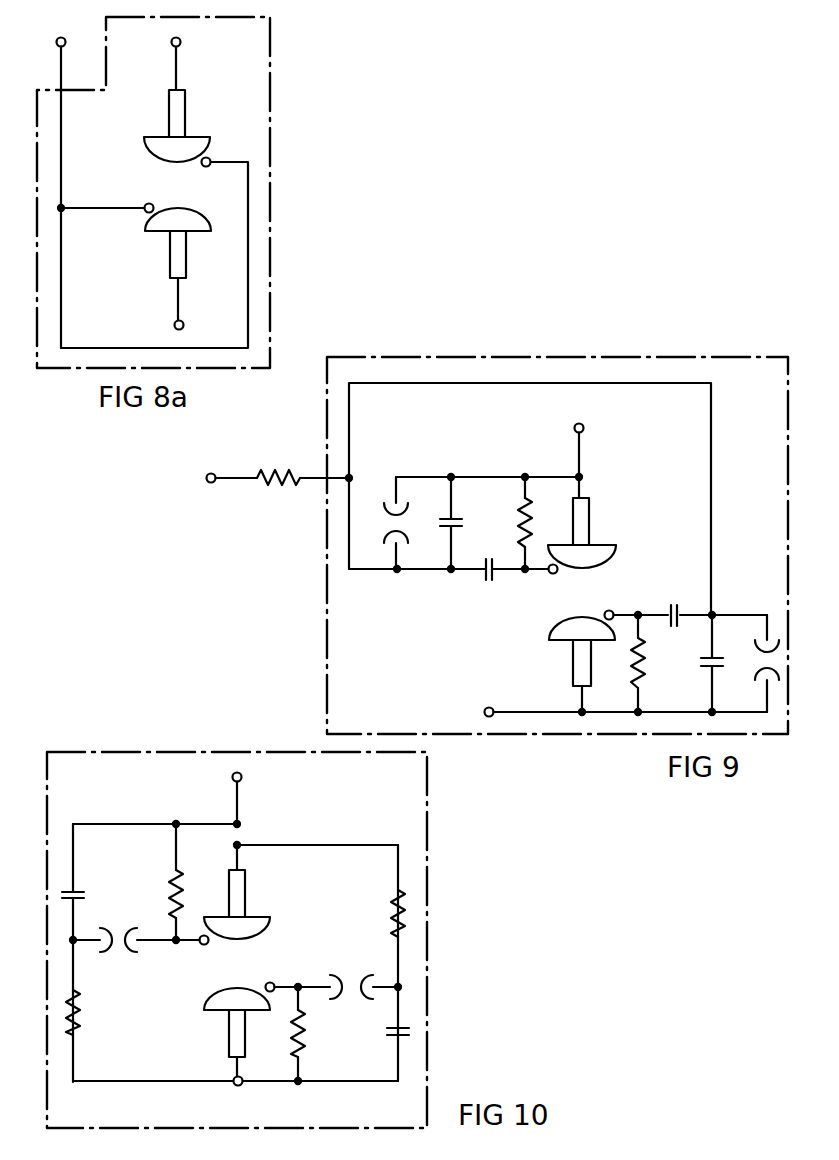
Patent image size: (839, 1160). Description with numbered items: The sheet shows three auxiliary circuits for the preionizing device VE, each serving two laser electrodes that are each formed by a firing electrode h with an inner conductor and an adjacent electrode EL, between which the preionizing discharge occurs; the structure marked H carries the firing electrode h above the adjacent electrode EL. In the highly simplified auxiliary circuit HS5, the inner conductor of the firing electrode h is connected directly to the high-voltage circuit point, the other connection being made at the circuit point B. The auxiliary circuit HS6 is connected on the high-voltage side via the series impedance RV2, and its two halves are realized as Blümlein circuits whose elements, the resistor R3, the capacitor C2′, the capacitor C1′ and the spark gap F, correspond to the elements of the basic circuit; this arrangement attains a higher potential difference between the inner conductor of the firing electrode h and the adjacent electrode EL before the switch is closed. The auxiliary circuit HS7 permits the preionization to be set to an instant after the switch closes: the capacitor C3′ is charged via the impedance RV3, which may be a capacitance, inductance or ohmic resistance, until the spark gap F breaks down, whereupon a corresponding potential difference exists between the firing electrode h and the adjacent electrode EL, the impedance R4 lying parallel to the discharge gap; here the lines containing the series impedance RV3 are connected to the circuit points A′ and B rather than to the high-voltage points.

In FIG. 8A, the auxiliary circuit HS5 is at (116, 130).
In FIG. 9, the auxiliary circuit HS6 is at (484, 447).
In FIG. 10, the auxiliary circuit HS7 is at (144, 801).
In FIG. 8A, the preionizing device VE is at (313, 201).
In FIG. 9, the preionizing device VE is at (326, 595).
In FIG. 10, the preionizing device VE is at (468, 850).
In FIG. 8A, the adjacent electrode EL is at (143, 141).
In FIG. 9, the adjacent electrode EL is at (614, 555).
In FIG. 10, the adjacent electrode EL is at (270, 928).
In FIG. 8A, the holder body H is at (184, 197).
In FIG. 9, the holder body H is at (586, 609).
In FIG. 10, the holder body H is at (243, 979).
In FIG. 8A, the firing electrode h is at (209, 160).
In FIG. 9, the firing electrode h is at (552, 574).
In FIG. 10, the firing electrode h is at (203, 946).
In FIG. 8A, the circuit point A′ is at (188, 61).
In FIG. 9, the circuit point A′ is at (583, 440).
In FIG. 10, the circuit point A′ is at (248, 796).
In FIG. 8A, the circuit point B is at (187, 328).
In FIG. 9, the circuit point B is at (625, 700).
In FIG. 10, the circuit point B is at (240, 1095).
In FIG. 9, the series impedance RV2 is at (279, 486).
In FIG. 10, the series impedance RV3 is at (82, 1012).
In FIG. 9, the resistor R3 is at (531, 528).
In FIG. 10, the impedance R4 is at (183, 882).
In FIG. 9, the spark gap F is at (392, 522).
In FIG. 10, the spark gap F is at (125, 932).
In FIG. 9, the capacitor C1′ is at (489, 582).
In FIG. 9, the capacitor C2′ is at (462, 521).
In FIG. 10, the capacitor C3′ is at (84, 895).